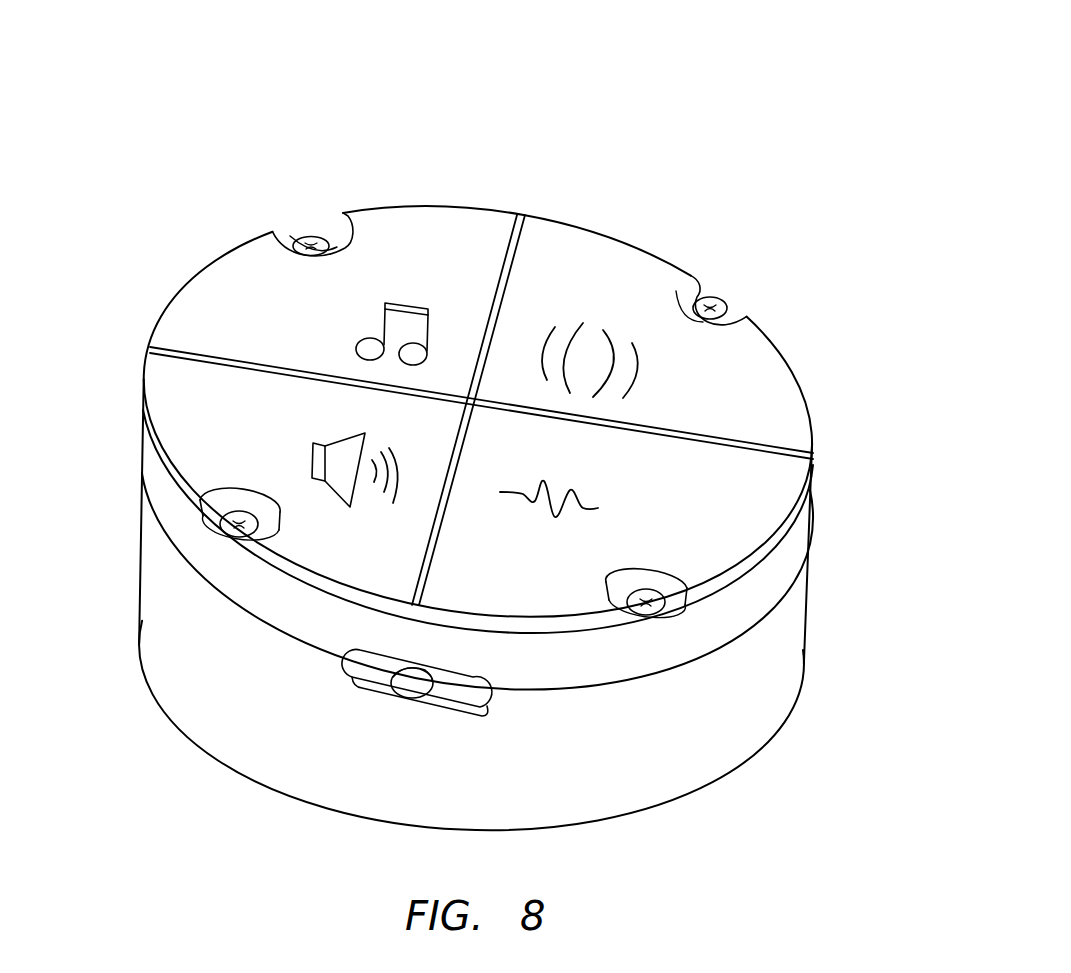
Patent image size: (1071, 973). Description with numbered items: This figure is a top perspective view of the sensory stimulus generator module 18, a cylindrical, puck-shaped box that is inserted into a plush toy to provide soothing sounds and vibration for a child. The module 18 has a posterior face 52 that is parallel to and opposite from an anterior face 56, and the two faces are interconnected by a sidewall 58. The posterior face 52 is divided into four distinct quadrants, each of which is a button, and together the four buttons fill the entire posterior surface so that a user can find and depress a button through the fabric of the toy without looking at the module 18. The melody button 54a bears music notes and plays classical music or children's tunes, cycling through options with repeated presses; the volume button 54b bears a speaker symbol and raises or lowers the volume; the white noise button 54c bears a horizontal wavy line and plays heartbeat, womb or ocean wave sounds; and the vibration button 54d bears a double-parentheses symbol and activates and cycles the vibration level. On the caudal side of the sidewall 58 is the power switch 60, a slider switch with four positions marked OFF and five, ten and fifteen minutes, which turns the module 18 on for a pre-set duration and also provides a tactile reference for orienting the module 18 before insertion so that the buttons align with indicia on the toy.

The sensory stimulus generator module 18 is at (553, 138).
The posterior face 52 is at (813, 460).
The melody button 54a is at (428, 243).
The volume button 54b is at (212, 390).
The white noise button 54c is at (720, 508).
The vibration button 54d is at (590, 270).
The anterior face 56 is at (677, 800).
The sidewall 58 is at (757, 650).
The power switch 60 is at (402, 687).